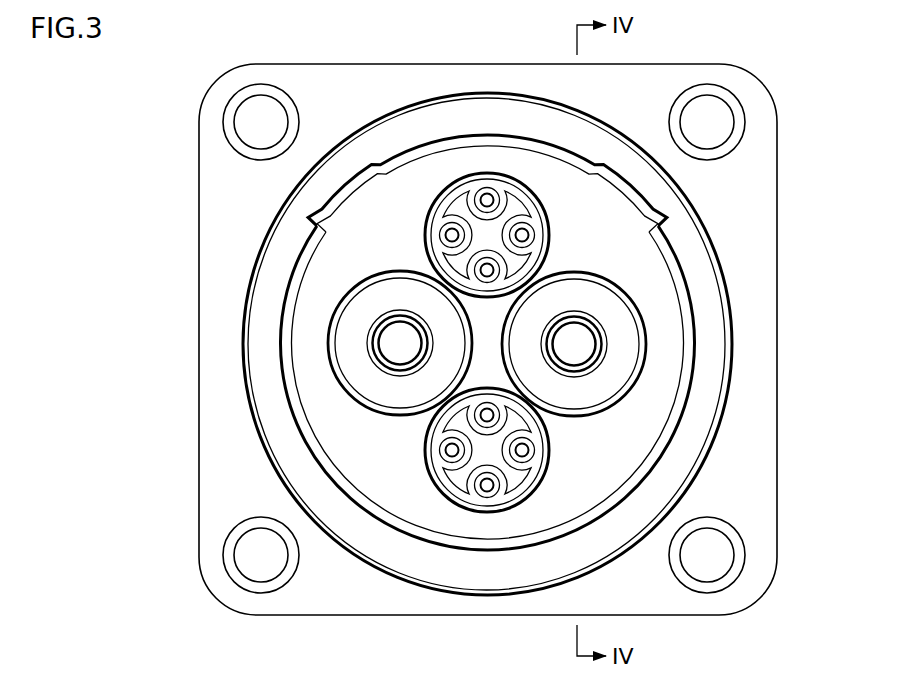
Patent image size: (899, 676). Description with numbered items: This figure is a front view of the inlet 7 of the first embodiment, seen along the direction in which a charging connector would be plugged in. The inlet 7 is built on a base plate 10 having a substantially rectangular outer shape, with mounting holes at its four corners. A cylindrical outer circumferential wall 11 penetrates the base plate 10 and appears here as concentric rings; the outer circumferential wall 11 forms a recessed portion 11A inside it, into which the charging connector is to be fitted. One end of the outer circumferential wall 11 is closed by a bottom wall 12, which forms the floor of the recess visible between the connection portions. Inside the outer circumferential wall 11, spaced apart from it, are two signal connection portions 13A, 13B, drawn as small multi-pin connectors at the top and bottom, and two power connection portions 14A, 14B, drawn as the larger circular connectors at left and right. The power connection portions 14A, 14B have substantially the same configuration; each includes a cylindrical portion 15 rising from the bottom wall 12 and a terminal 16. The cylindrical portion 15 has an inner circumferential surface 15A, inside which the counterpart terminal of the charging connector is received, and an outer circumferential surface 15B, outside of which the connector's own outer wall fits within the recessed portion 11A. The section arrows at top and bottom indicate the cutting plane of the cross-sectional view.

The inlet 7 is at (184, 104).
The base plate 10 is at (758, 303).
The outer circumferential wall 11 is at (710, 380).
The recessed portion 11A is at (586, 220).
The bottom wall 12 is at (662, 362).
The signal connection portion 13A is at (424, 233).
The signal connection portion 13B is at (424, 446).
The power connection portion 14A is at (624, 400).
The power connection portion 14B is at (438, 401).
The cylindrical portion 15 is at (586, 343).
The inner circumferential surface 15A is at (600, 305).
The outer circumferential surface 15B is at (645, 340).
The terminal 16 is at (575, 333).